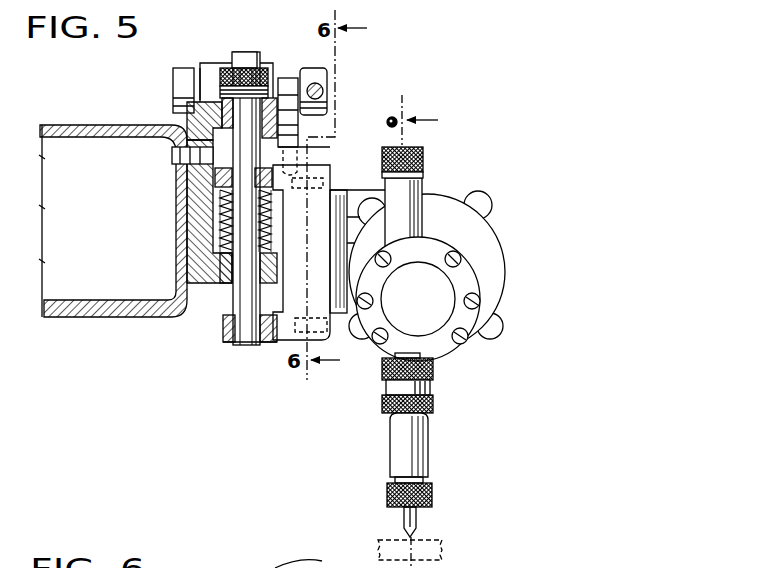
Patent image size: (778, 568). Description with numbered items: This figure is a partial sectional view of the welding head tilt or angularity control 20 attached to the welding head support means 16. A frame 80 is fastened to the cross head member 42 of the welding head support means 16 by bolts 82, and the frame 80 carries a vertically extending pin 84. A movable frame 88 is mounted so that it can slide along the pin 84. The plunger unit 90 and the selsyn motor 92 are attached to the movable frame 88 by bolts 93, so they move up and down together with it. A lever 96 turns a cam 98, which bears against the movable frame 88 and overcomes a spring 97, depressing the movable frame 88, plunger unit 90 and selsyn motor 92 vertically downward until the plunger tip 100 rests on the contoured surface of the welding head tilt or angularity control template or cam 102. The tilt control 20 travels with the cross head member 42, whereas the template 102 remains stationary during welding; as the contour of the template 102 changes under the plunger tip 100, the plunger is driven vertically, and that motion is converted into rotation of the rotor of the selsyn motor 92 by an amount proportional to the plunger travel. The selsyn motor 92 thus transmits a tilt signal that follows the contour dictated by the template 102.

The welding head support means 16 is at (102, 194).
The cross head member 42 is at (112, 125).
The frame 80 is at (212, 283).
The bolts 82 is at (173, 154).
The pin 84 is at (246, 52).
The movable frame 88 is at (272, 344).
The spring 97 is at (230, 222).
The bolts 93 is at (332, 170).
The lever 96 is at (324, 90).
The cam 98 is at (298, 130).
The welding head tilt or angularity control 20 is at (451, 342).
The selsyn motor 92 is at (505, 247).
The plunger unit 90 is at (400, 446).
The plunger tip 100 is at (416, 517).
The welding head tilt or angularity control template or cam 102 is at (395, 545).